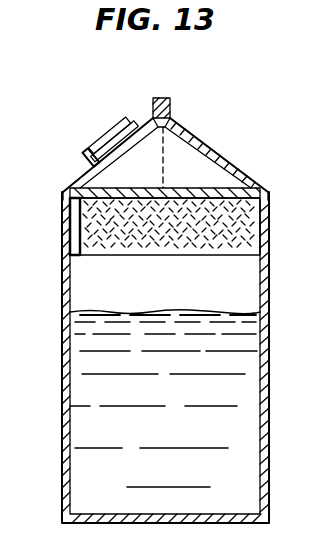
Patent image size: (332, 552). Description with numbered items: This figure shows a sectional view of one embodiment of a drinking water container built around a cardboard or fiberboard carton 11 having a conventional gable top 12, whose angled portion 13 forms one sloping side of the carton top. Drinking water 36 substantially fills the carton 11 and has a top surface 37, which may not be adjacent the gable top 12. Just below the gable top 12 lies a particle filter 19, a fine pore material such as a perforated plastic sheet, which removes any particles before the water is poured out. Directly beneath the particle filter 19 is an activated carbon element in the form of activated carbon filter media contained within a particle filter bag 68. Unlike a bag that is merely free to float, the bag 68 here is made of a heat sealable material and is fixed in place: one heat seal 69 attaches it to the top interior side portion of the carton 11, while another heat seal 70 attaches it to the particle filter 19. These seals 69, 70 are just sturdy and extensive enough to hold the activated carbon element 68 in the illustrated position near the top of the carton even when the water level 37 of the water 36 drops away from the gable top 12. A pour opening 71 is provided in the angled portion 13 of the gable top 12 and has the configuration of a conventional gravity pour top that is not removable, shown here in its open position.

The carton 11 is at (62, 343).
The gable top 12 is at (220, 117).
The angled portion 13 is at (82, 176).
The particle filter 19 is at (197, 188).
The drinking water 36 is at (226, 476).
The top surface 37 is at (262, 312).
The particle filter bag 68 is at (195, 250).
The heat seal 69 is at (73, 243).
The heat seal 70 is at (63, 196).
The pour opening 71 is at (136, 113).